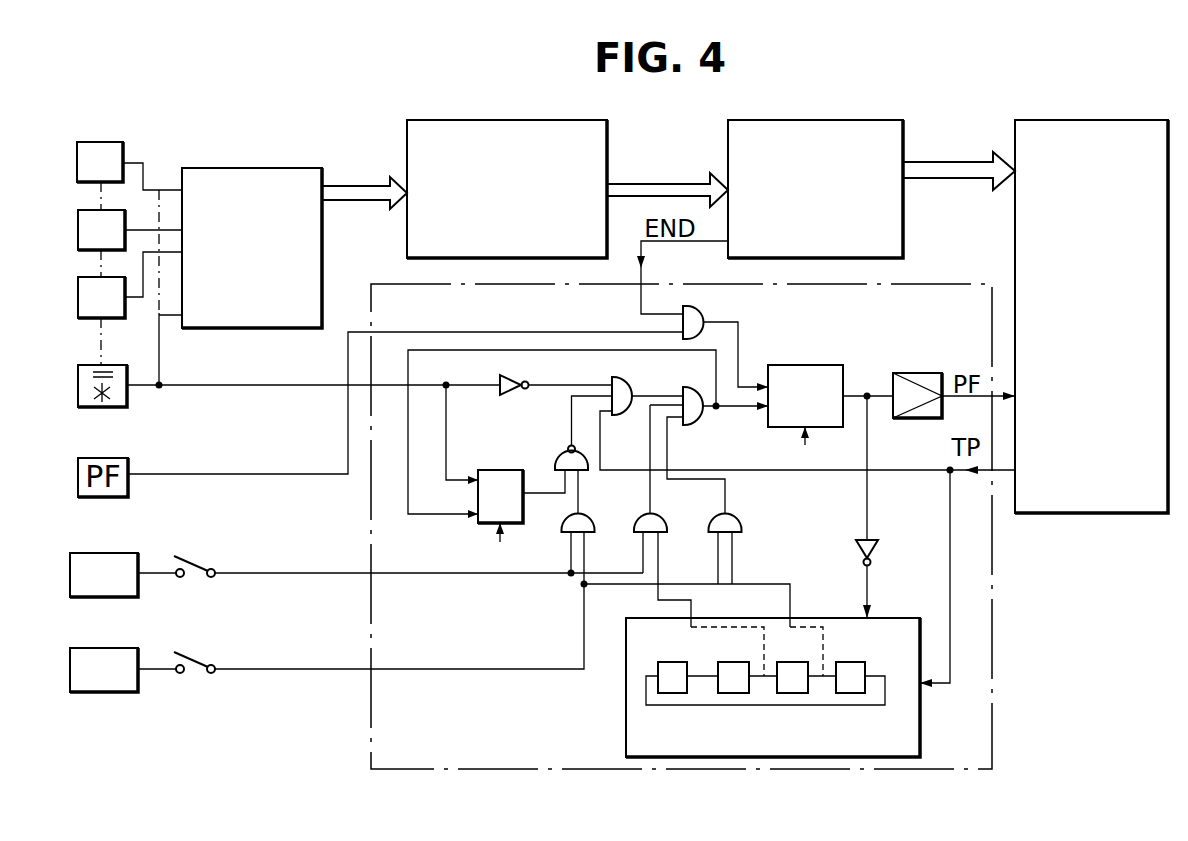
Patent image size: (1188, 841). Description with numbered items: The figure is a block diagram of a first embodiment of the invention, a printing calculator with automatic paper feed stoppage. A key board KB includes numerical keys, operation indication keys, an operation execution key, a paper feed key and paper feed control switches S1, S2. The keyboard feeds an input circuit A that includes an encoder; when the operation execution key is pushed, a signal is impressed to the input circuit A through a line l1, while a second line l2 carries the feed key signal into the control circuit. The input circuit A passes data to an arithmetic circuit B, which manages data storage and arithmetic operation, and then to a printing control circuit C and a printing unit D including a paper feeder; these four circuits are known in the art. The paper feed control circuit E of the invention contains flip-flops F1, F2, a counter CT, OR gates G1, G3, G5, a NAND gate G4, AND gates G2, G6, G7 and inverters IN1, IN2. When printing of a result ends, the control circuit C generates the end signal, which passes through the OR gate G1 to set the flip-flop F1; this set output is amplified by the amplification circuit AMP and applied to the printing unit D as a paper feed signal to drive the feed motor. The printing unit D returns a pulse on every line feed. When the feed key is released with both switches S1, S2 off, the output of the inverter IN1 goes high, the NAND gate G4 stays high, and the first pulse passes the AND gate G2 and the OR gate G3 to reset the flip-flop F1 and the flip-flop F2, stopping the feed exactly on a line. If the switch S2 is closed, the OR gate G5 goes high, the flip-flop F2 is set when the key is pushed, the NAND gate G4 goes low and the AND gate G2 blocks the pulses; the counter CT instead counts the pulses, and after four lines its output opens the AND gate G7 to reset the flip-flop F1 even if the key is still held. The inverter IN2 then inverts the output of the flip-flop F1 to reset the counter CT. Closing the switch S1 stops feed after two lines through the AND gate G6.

The key board KB is at (100, 130).
The input circuit A is at (252, 232).
The arithmetic circuit B is at (507, 171).
The printing control circuit C is at (815, 171).
The printing unit D is at (1091, 298).
The paper feed control circuit E is at (681, 541).
The line l1 is at (162, 350).
The line l2 is at (260, 388).
The paper feed control switch S1 is at (200, 562).
The paper feed control switch S2 is at (200, 657).
The inverter IN1 is at (498, 378).
The inverter IN2 is at (881, 551).
The OR gate G1 is at (700, 309).
The AND gate G2 is at (628, 380).
The OR gate G3 is at (704, 422).
The NAND gate G4 is at (555, 460).
The OR gate G5 is at (596, 520).
The AND gate G6 is at (668, 516).
The AND gate G7 is at (742, 516).
The flip-flop F1 is at (830, 417).
The flip-flop F2 is at (484, 477).
The amplification circuit AMP is at (920, 372).
The counter CT is at (626, 698).